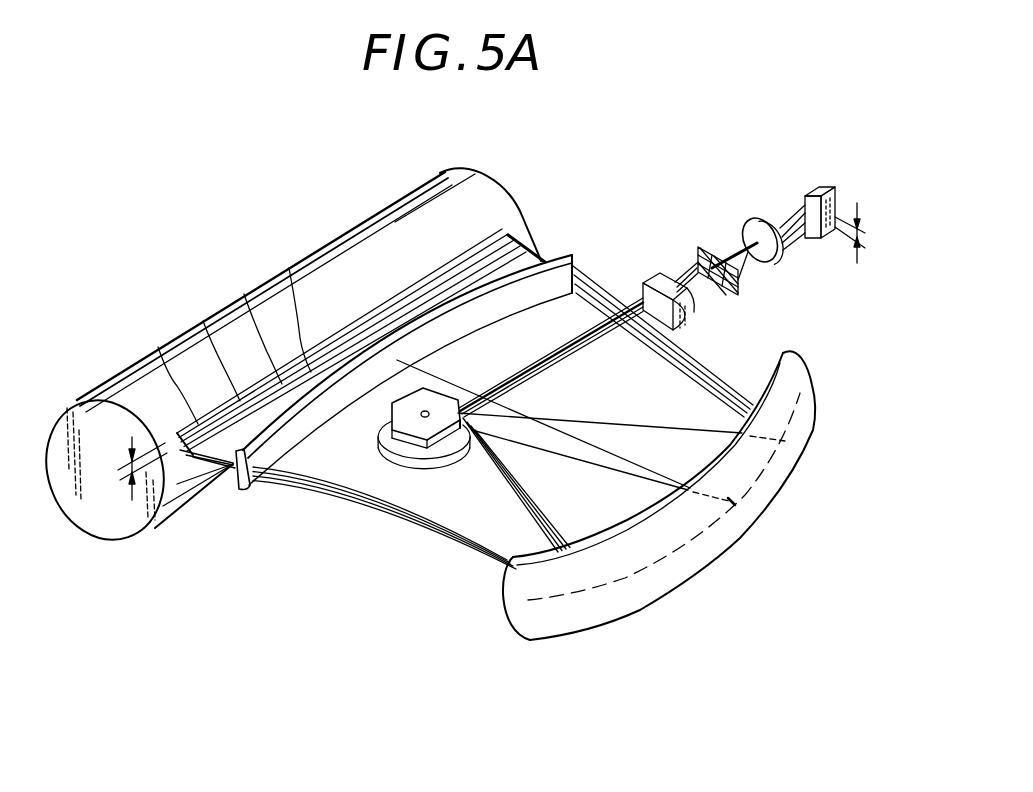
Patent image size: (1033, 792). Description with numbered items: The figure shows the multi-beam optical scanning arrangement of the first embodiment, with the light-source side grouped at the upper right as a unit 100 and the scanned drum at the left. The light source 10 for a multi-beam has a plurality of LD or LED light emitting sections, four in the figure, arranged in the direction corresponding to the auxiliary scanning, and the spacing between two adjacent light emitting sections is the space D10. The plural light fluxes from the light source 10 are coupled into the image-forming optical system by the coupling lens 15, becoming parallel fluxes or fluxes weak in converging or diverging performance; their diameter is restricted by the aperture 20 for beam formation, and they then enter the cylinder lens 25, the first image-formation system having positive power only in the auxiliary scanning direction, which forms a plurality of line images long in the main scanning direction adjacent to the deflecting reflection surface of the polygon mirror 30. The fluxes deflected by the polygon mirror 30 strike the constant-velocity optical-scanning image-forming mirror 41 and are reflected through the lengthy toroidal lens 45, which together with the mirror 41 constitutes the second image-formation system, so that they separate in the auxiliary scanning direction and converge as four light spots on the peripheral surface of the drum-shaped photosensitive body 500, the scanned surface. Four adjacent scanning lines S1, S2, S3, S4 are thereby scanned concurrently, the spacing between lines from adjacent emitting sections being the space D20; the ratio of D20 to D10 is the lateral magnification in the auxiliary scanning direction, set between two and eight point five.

The drum-shaped photosensitive body 500 is at (478, 193).
The scanning line S1 is at (157, 348).
The scanning line S2 is at (203, 322).
The scanning line S3 is at (246, 296).
The scanning line S4 is at (291, 266).
The space of scanning lines D20 is at (122, 468).
The lengthy toroidal lens 45 is at (571, 252).
The polygon mirror 30 is at (382, 440).
The constant-velocity optical-scanning image-forming mirror 41 is at (797, 371).
The cylinder lens 25 is at (693, 320).
The aperture for beam formation 20 is at (740, 292).
The coupling lens 15 is at (780, 252).
The light source for a multi-beam 10 is at (823, 182).
The space of two adjacent light emitting sections D10 is at (862, 245).
The light source unit 100 is at (729, 220).